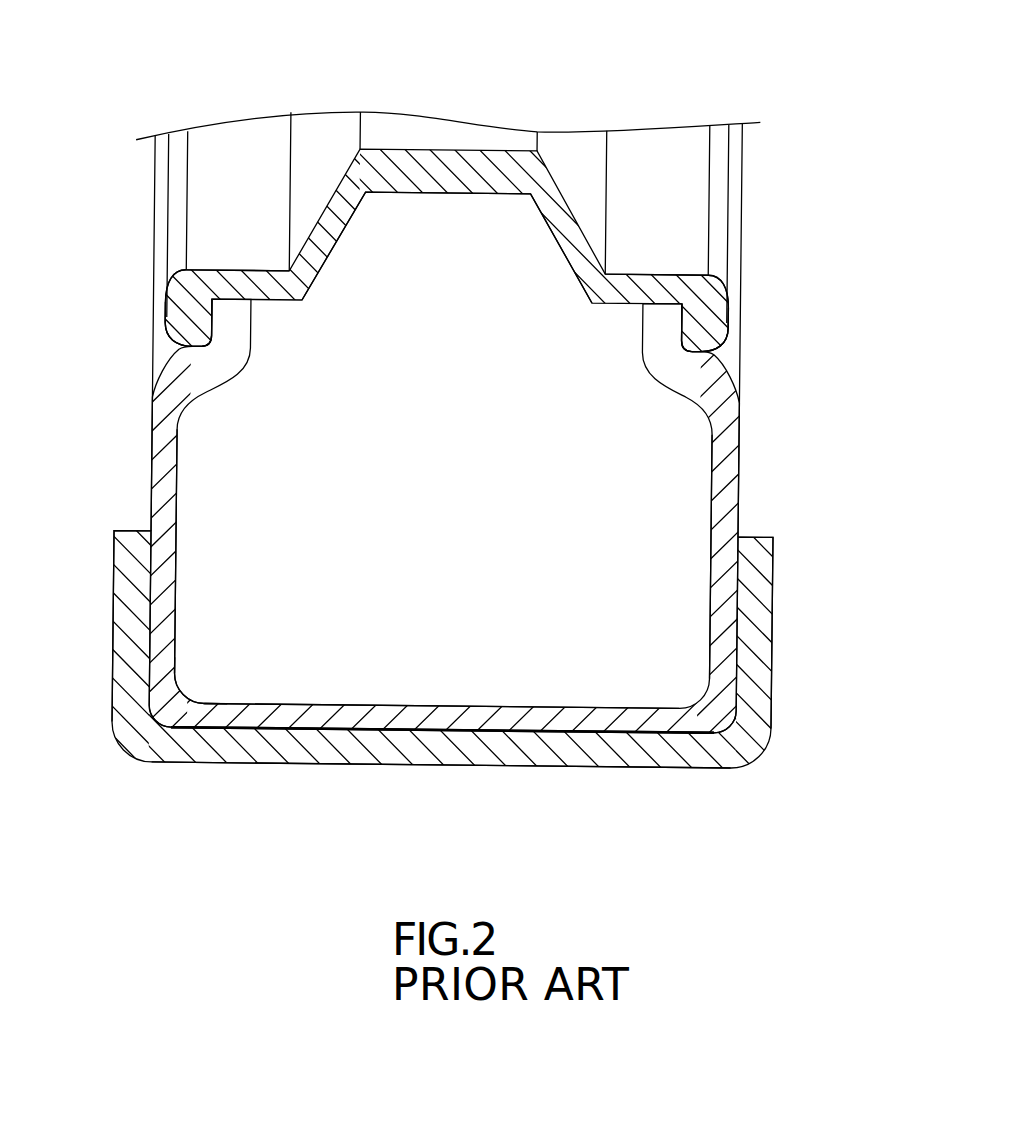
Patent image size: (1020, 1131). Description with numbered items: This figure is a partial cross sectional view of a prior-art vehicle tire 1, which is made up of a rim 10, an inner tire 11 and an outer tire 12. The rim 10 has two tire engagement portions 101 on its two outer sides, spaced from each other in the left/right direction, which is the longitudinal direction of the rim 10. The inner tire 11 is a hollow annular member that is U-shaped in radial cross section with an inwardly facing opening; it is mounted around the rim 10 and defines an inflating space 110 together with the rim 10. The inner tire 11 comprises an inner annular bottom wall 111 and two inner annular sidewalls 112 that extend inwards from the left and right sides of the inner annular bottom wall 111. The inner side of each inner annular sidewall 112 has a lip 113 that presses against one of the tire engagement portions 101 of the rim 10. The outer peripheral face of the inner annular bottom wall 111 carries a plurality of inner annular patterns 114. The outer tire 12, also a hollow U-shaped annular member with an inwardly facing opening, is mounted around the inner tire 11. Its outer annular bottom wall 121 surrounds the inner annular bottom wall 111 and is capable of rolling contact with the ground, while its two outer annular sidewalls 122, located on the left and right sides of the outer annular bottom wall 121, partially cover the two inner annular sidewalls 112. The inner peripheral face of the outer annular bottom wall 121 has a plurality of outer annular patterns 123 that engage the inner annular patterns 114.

The vehicle tire 1 is at (653, 104).
The rim 10 is at (447, 163).
The inflating space 110 is at (450, 333).
The lip 113 is at (239, 315).
The tire engagement portion 101 is at (182, 322).
The inner tire 11 is at (743, 426).
The inner annular sidewall 112 is at (162, 499).
The inner annular bottom wall 111 is at (430, 718).
The inner annular pattern 114 is at (340, 707).
The outer tire 12 is at (588, 766).
The outer annular sidewall 122 is at (129, 574).
The outer annular bottom wall 121 is at (669, 760).
The outer annular pattern 123 is at (513, 735).